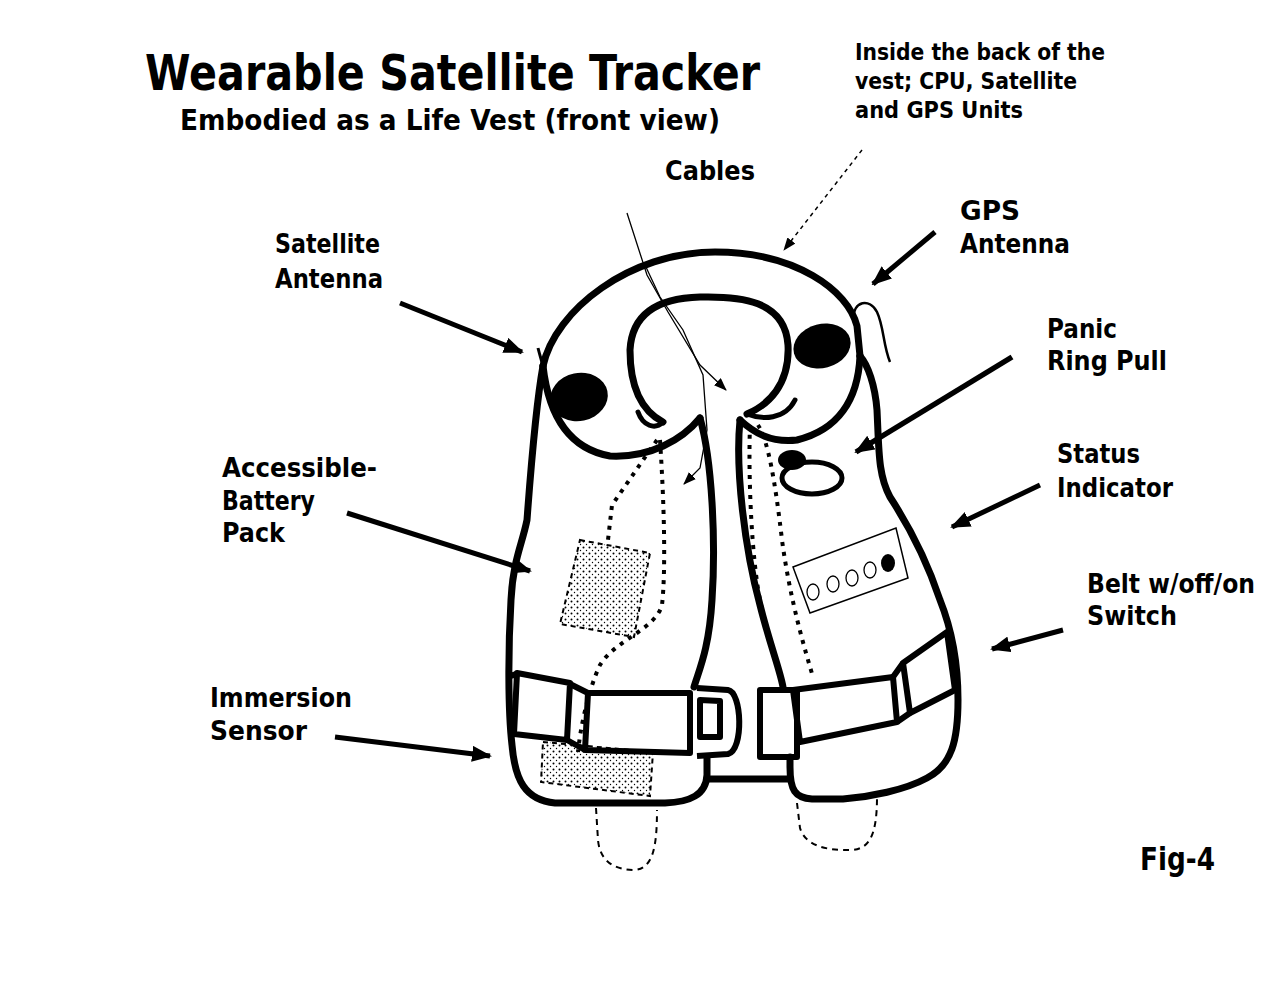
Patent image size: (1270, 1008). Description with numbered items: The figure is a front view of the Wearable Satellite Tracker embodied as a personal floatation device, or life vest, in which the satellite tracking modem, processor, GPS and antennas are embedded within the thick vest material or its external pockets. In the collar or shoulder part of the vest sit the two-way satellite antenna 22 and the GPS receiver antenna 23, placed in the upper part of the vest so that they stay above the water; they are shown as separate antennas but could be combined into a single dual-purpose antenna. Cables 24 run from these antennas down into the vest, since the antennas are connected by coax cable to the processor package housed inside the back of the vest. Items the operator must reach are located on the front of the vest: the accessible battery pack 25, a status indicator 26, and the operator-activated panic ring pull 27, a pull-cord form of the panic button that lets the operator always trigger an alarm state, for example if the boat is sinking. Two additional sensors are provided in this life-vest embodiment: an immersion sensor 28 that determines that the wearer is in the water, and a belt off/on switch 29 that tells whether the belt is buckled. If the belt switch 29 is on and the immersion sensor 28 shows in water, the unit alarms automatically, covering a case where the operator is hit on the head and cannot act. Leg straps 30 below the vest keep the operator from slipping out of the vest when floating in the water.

The two-way satellite antenna 22 is at (539, 348).
The GPS receiver antenna 23 is at (890, 362).
The cables 24 is at (669, 331).
The battery pack 25 is at (571, 526).
The status indicator 26 is at (912, 553).
The panic ring pull 27 is at (858, 478).
The immersion sensor 28 is at (534, 760).
The belt off/on switch 29 is at (982, 682).
The leg straps 30 is at (672, 843).